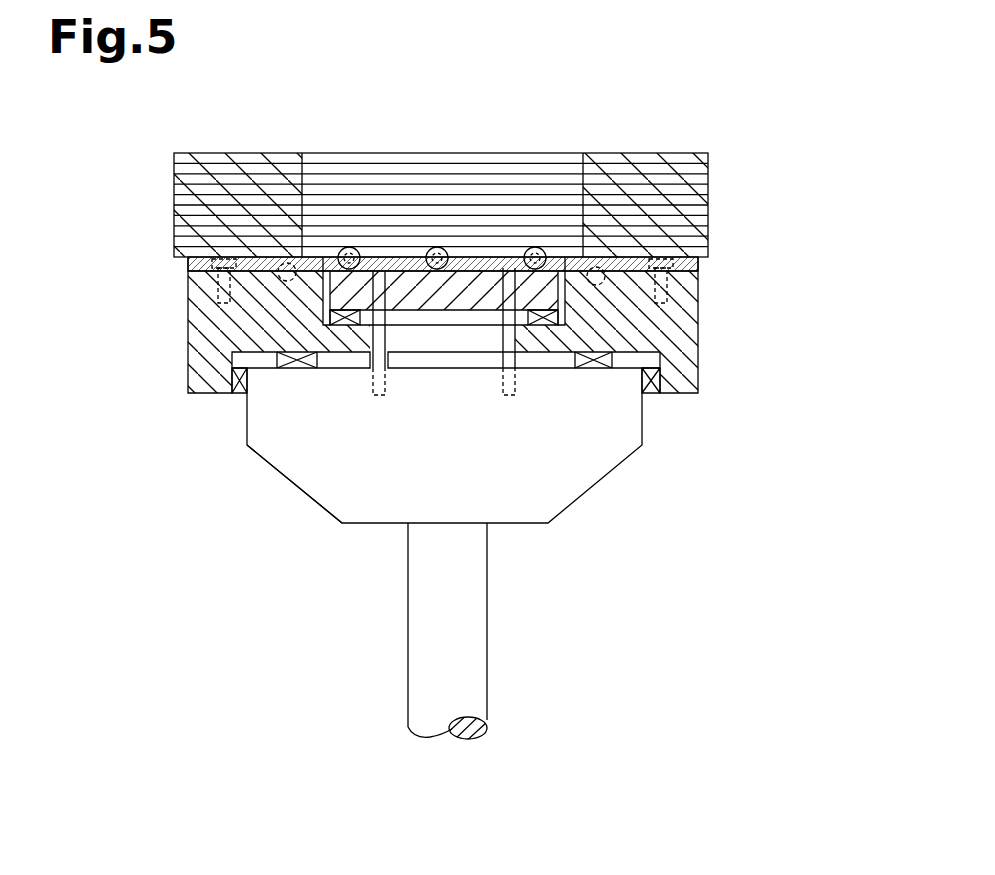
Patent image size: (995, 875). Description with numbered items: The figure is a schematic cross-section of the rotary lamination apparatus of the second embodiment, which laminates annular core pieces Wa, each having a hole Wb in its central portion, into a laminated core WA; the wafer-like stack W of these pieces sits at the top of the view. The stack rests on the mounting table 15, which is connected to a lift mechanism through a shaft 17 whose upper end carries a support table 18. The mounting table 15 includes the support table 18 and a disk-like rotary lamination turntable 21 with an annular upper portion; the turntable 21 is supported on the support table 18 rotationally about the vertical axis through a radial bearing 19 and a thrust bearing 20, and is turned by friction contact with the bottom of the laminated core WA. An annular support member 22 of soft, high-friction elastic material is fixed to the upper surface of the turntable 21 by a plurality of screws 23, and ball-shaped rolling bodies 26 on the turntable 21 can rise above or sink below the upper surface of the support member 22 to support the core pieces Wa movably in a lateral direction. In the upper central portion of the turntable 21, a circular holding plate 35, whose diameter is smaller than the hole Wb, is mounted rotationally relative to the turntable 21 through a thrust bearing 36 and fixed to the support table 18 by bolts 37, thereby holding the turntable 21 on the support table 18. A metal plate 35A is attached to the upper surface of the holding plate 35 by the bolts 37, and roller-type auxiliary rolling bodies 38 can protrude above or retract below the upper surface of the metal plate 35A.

The semiconductor wafer W is at (441, 205).
The laminated core WA is at (350, 153).
The core piece Wa is at (497, 166).
The hole Wb is at (303, 153).
The mounting table 15 is at (271, 466).
The shaft 17 is at (408, 627).
The support table 18 is at (317, 499).
The radial bearing 19 is at (240, 394).
The thrust bearing 20 is at (297, 368).
The rotary lamination turntable 21 is at (188, 333).
The support member 22 is at (190, 262).
The screws 23 is at (218, 291).
The rolling body 26 is at (282, 280).
The holding plate 35 is at (333, 295).
The metal plate 35A is at (413, 293).
The thrust bearing 36 is at (345, 326).
The bolts 37 is at (379, 398).
The auxiliary rolling body 38 is at (438, 272).